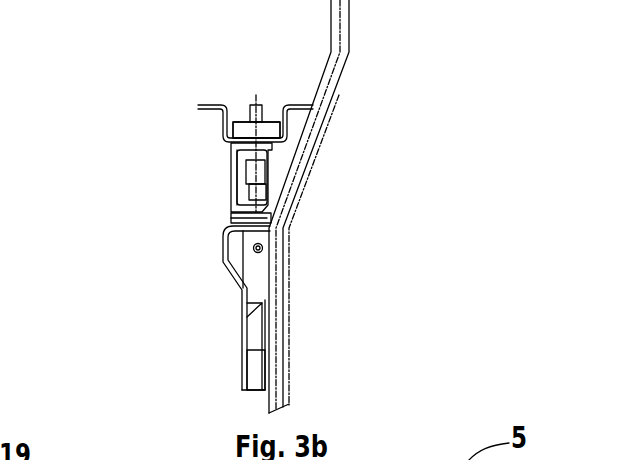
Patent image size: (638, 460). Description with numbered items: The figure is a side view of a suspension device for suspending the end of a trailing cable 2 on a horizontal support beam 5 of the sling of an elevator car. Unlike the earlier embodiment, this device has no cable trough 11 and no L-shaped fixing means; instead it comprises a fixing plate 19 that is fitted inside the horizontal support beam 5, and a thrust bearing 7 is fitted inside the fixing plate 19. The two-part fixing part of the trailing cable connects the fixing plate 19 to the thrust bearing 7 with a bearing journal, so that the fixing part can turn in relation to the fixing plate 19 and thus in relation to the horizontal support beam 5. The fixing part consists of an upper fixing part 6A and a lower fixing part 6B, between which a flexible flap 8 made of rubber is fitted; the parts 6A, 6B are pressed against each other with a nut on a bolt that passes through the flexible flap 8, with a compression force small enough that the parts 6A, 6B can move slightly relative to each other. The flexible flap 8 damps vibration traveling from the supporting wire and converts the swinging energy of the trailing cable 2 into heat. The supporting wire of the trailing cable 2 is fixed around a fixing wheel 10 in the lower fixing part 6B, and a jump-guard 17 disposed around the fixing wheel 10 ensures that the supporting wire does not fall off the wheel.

The trailing cable 2 is at (349, 53).
The horizontal support beam 5 is at (217, 104).
The upper fixing part 6A is at (245, 178).
The lower fixing part 6B is at (250, 302).
The thrust bearing 7 is at (280, 128).
The fixing plate 19 is at (256, 130).
The flexible flap 8 is at (270, 217).
The fixing wheel 10 is at (257, 370).
The cable trough 11 is at (312, 163).
The jump-guard 17 is at (262, 333).